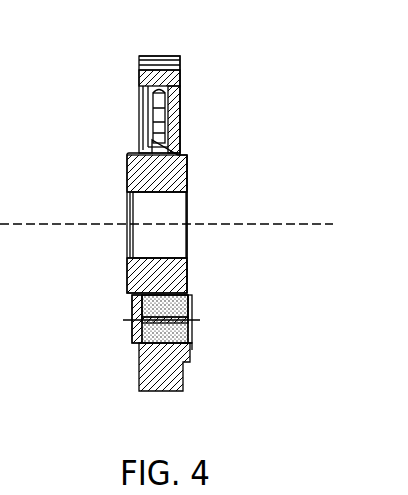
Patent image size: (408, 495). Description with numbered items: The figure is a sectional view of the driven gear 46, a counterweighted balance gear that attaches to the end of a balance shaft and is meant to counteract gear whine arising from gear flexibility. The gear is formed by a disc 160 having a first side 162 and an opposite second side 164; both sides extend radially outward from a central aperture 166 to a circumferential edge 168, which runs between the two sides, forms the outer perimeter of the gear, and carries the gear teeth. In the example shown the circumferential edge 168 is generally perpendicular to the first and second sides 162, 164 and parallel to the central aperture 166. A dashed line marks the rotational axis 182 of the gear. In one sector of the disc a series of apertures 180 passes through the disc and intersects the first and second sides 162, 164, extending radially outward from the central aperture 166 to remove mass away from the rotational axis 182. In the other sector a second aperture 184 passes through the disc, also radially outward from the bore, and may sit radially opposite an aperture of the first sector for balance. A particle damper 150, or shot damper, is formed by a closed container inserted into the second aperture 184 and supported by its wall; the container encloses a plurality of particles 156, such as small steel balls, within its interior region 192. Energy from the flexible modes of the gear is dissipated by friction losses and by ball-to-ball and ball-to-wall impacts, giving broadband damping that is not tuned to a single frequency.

The disc 160 is at (113, 95).
The driven gear 46 is at (232, 108).
The apertures 180 is at (168, 100).
The first side 162 is at (108, 167).
The second side 164 is at (199, 170).
The central aperture 166 is at (167, 253).
The rotational axis 182 is at (310, 225).
The particles 156 is at (185, 303).
The particle damper 150 is at (194, 328).
The second aperture 184 is at (142, 350).
The interior region 192 is at (191, 346).
The circumferential edge 168 is at (158, 392).